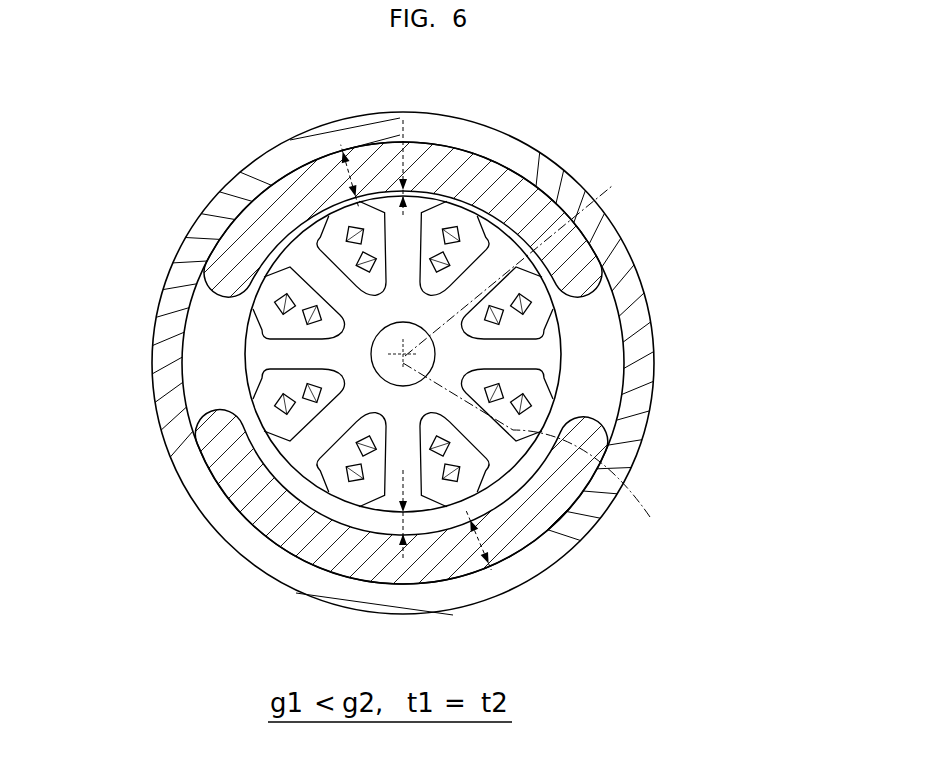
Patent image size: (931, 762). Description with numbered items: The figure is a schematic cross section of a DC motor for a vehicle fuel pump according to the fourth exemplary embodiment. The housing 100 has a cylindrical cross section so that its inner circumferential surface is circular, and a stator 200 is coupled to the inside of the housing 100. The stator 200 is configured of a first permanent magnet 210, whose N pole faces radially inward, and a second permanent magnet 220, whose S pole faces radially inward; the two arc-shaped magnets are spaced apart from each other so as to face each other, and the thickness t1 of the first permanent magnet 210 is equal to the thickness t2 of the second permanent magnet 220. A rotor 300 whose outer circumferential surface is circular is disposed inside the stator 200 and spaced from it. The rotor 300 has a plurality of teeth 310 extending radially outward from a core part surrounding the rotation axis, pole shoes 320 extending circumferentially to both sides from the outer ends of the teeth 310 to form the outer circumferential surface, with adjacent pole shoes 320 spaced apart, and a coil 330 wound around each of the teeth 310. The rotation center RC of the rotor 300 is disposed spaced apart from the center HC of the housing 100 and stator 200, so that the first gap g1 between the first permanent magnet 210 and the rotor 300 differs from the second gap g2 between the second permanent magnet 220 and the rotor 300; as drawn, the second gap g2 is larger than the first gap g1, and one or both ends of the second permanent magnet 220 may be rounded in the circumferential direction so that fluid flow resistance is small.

The housing 100 is at (188, 244).
The stator 200 is at (465, 350).
The first permanent magnet 210 is at (585, 263).
The second permanent magnet 220 is at (400, 585).
The rotor 300 is at (309, 363).
The teeth 310 is at (247, 352).
The pole shoes 320 is at (250, 309).
The coil 330 is at (270, 438).
The rotor center RC is at (519, 258).
The housing center HC is at (536, 454).
The first gap g1 is at (457, 188).
The second gap g2 is at (440, 525).
The thickness of the first permanent magnet t1 is at (352, 140).
The thickness of the second permanent magnet t2 is at (495, 574).